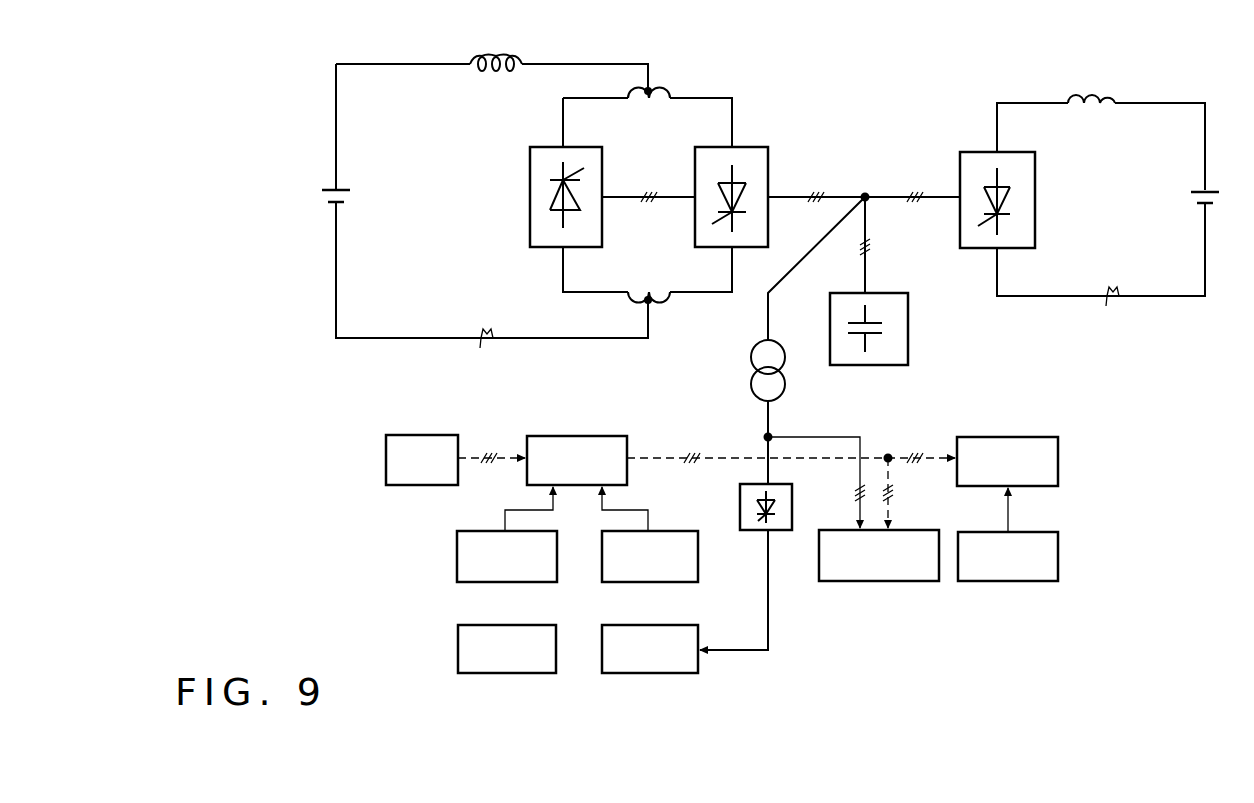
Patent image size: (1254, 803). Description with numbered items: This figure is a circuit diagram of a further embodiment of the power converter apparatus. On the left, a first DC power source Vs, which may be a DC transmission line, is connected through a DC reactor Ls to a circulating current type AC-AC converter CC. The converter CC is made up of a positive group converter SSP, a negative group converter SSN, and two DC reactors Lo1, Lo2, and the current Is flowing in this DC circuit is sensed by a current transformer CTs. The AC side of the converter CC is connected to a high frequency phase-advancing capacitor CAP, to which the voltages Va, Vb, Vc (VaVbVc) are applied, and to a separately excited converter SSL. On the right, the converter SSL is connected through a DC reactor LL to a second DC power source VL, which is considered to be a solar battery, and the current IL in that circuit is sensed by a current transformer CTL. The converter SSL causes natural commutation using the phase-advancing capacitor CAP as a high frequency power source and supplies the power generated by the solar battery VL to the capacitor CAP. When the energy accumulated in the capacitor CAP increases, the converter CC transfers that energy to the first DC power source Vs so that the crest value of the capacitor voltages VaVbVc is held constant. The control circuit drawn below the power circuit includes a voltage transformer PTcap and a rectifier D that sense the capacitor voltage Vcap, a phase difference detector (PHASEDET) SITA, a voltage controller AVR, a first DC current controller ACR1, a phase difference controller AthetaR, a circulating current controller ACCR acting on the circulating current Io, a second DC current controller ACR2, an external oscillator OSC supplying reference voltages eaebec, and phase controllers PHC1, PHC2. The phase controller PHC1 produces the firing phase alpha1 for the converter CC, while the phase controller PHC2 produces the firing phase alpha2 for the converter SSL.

The first DC power source Vs is at (354, 193).
The DC reactor Ls is at (496, 51).
The circulating current type AC-AC converter CC is at (718, 68).
The DC reactor Lo1 is at (649, 111).
The DC reactor Lo2 is at (649, 281).
The positive group converter SSP is at (545, 150).
The negative group converter SSN is at (738, 181).
The DC current Is is at (468, 322).
The current transformer CTs is at (503, 352).
The voltages Va, Vb, and Vc VaVbVc is at (837, 197).
The separately excited converter SSL is at (972, 152).
The DC reactor LL is at (1101, 182).
The second DC power source VL is at (1218, 196).
The DC current IL is at (1098, 277).
The current transformer CTL is at (1129, 309).
The high frequency phase-advancing capacitor CAP is at (901, 329).
The voltage transformer PTcap is at (782, 389).
The rectifier D is at (784, 530).
The phase control angle alpha1 is at (577, 436).
The phase control angle alpha2 is at (1008, 437).
The oscillator output voltages ea, eb, ec eaebec is at (468, 448).
The external oscillator OSC is at (455, 460).
The phase controller PHC1 is at (741, 460).
The phase controller PHC2 is at (1007, 461).
The circulating current controller ACCR is at (507, 534).
The first DC current controller ACR1 is at (650, 534).
The circulating current Io is at (455, 553).
The phase difference controller AthetaR is at (507, 649).
The voltage controller AVR is at (650, 649).
The capacitor voltage Vcap is at (739, 663).
The phase difference detector PHASEDET is at (853, 509).
The phase difference detector SITA is at (912, 583).
The second DC current controller ACR2 is at (1008, 534).